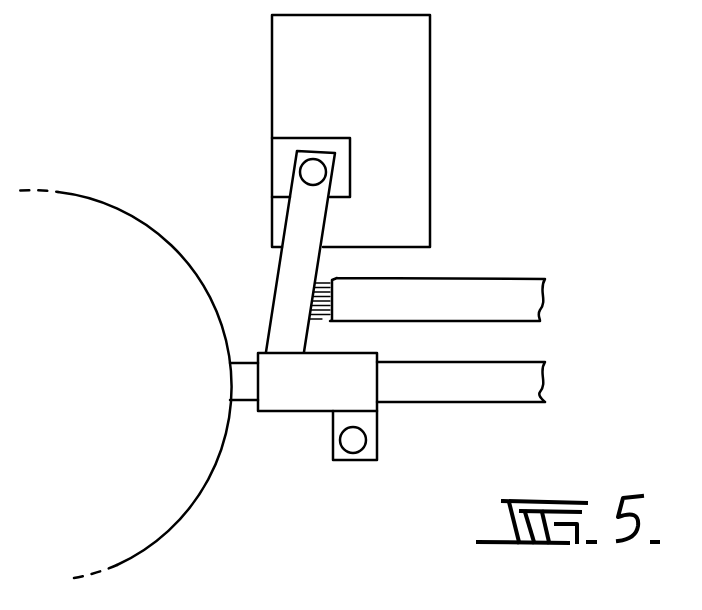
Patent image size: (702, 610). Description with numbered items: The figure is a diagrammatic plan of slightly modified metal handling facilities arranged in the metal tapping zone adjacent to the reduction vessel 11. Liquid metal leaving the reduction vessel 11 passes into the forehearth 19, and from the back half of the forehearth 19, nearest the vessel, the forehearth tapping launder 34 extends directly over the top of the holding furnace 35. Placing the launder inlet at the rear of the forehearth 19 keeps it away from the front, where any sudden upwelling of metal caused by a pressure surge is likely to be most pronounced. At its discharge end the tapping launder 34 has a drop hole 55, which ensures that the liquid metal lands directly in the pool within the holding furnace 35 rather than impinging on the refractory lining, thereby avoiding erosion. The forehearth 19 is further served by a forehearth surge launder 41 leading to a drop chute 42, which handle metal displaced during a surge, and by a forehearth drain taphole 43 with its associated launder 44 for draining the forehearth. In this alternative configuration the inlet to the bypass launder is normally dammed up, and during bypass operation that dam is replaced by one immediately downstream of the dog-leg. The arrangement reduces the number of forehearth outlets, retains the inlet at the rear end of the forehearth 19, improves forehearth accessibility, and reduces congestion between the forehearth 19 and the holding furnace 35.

The reduction vessel 11 is at (186, 507).
The forehearth 19 is at (295, 375).
The forehearth tapping launder 34 is at (300, 230).
The holding furnace 35 is at (390, 120).
The forehearth surge launder 41 is at (377, 450).
The drop chute 42 is at (353, 443).
The forehearth drain taphole 43 is at (377, 380).
The forehearth drain launder 44 is at (525, 387).
The drop hole 55 is at (303, 172).